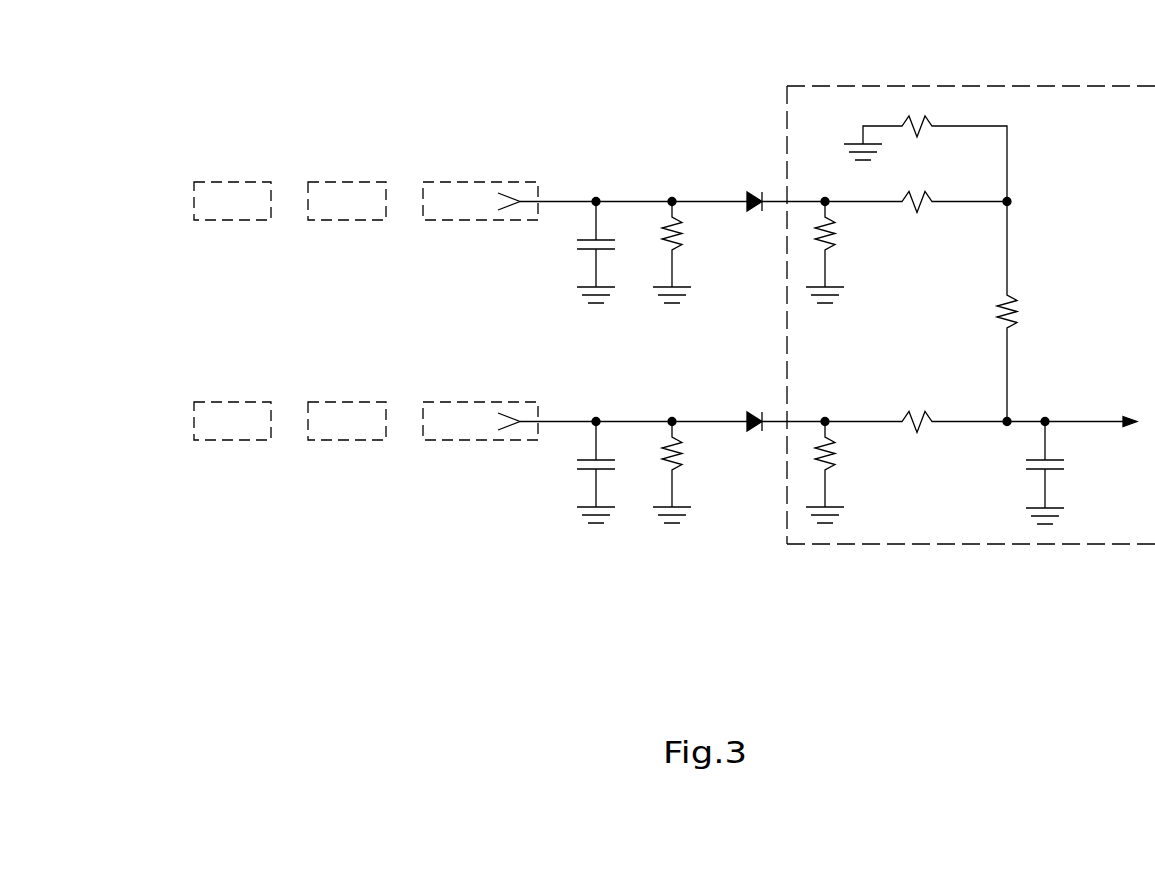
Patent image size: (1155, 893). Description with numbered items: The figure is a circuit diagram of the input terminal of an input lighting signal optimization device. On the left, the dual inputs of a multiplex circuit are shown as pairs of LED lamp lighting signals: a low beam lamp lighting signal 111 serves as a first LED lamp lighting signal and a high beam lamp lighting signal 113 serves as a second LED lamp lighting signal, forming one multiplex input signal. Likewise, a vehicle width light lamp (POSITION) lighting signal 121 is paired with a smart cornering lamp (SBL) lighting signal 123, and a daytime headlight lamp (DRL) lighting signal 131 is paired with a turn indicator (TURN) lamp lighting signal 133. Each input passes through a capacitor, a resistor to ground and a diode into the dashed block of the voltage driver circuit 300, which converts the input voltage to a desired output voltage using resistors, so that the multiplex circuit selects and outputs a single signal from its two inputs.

The turn indicator (TURN) lamp lighting signal 133 is at (232, 180).
The smart cornering lamp (SBL) lighting signal 123 is at (347, 180).
The high beam lamp lighting signal 113 is at (480, 180).
The daytime headlight lamp (DRL) lighting signal 131 is at (232, 400).
The vehicle width light lamp (POSITION) lighting signal 121 is at (347, 400).
The low beam lamp lighting signal 111 is at (480, 400).
The voltage driver circuit 300 is at (980, 86).